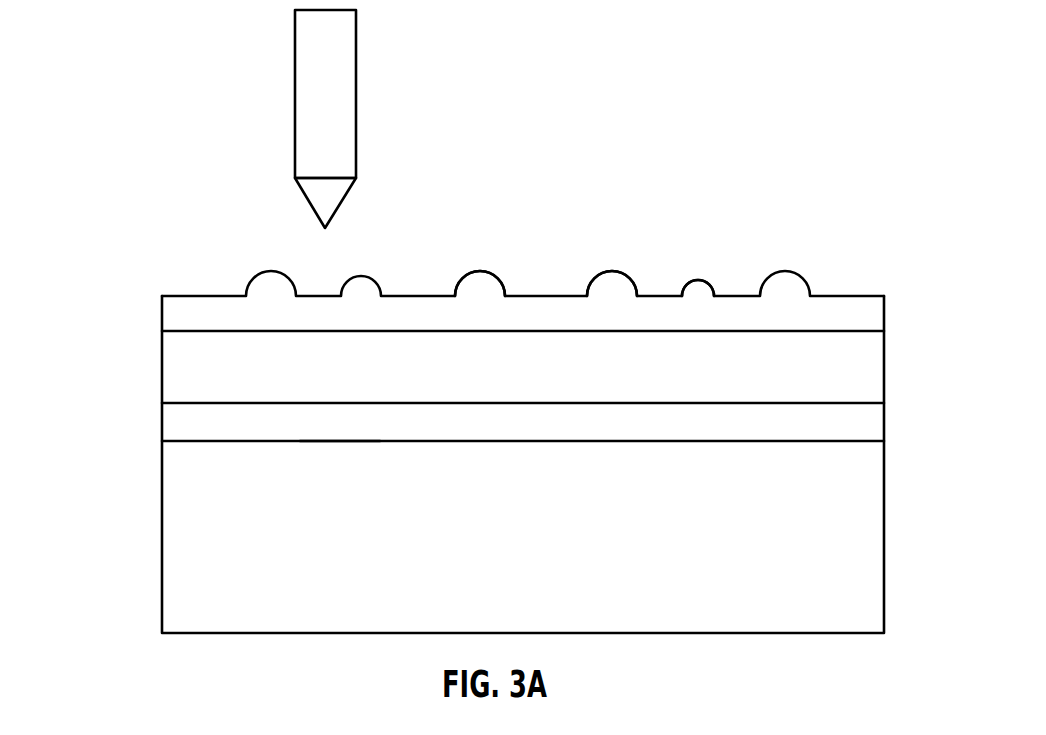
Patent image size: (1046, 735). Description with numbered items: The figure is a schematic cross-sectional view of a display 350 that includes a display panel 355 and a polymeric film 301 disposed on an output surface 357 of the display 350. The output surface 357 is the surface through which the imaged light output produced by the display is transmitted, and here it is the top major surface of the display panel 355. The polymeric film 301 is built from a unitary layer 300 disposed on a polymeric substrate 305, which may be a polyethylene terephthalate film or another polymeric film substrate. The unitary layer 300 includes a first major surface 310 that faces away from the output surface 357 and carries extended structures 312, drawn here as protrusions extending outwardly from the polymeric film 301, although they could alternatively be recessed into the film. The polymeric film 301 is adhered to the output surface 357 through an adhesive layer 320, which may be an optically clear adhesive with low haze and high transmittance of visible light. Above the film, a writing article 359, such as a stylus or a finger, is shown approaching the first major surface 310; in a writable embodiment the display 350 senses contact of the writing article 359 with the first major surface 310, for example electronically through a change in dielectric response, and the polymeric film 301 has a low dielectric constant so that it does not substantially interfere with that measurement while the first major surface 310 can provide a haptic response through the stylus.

The unitary layer 300 is at (866, 310).
The polymeric film 301 is at (158, 297).
The polymeric substrate 305 is at (866, 376).
The first major surface 310 is at (522, 296).
The extended structures 312 is at (610, 271).
The adhesive layer 320 is at (866, 430).
The display 350 is at (131, 213).
The display panel 355 is at (198, 543).
The output surface 357 is at (337, 443).
The writing article 359 is at (320, 107).